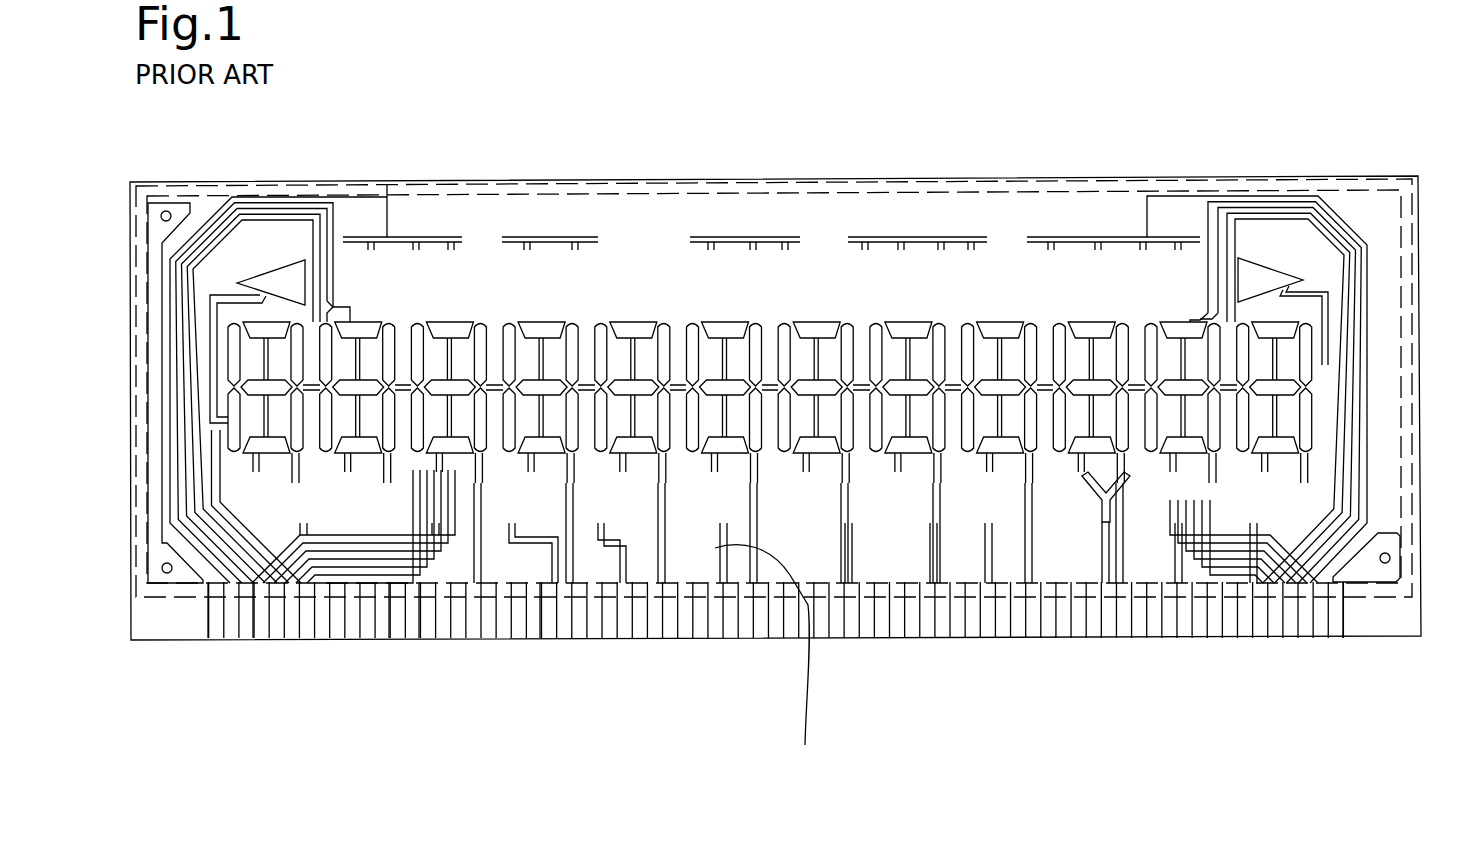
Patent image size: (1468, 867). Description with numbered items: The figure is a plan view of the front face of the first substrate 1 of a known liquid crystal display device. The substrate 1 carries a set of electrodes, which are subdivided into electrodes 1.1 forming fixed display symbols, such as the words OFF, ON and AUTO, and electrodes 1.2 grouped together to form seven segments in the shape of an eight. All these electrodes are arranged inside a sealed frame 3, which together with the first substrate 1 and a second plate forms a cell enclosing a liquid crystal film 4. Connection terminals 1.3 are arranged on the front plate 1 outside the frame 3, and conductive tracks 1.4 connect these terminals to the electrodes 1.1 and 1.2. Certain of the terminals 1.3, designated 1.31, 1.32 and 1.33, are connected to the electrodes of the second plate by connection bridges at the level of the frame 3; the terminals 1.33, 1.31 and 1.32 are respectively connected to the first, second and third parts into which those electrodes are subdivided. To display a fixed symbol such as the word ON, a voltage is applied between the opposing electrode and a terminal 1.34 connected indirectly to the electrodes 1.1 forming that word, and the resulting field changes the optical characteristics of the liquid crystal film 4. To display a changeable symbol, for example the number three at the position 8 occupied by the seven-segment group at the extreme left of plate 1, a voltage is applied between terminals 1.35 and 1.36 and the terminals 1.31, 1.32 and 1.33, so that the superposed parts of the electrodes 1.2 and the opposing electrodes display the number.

The first substrate 1 is at (1421, 607).
The sealed frame 3 is at (1405, 209).
The liquid crystal film 4 is at (842, 311).
The position 8 is at (212, 392).
The electrodes forming fixed symbols 1.1 is at (663, 262).
The electrodes forming groups of seven segments 1.2 is at (945, 345).
The connection terminals 1.3 is at (748, 640).
The conductive tracks 1.4 is at (770, 661).
The terminal 1.31 is at (215, 640).
The terminal 1.32 is at (242, 640).
The terminal 1.33 is at (1340, 640).
The terminal 1.34 is at (540, 640).
The terminal 1.35 is at (422, 640).
The terminal 1.36 is at (397, 640).